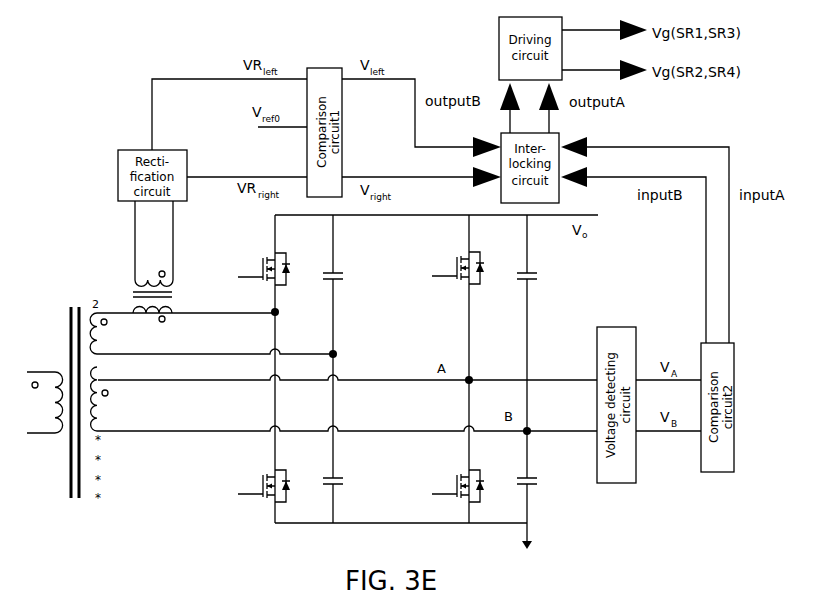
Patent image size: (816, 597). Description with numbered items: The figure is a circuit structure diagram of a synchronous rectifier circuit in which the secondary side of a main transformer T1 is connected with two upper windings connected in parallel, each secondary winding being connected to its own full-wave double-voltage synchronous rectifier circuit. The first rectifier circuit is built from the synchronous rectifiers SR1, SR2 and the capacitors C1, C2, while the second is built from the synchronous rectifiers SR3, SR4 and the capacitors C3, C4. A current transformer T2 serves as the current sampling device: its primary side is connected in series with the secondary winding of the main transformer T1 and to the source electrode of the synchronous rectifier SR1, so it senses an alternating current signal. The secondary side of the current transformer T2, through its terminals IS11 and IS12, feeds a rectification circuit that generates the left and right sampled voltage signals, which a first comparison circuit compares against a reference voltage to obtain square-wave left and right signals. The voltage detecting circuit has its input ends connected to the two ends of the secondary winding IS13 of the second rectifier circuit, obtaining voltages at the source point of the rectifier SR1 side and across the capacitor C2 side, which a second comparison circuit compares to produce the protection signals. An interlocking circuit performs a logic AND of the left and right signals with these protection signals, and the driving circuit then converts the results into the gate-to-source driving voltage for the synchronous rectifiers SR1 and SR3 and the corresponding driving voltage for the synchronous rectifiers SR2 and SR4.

The main transformer T1 is at (75, 420).
The current transformer T2 is at (160, 277).
The synchronous rectifier SR1 is at (256, 263).
The synchronous rectifier SR2 is at (255, 481).
The synchronous rectifier SR3 is at (450, 261).
The synchronous rectifier SR4 is at (448, 480).
The capacitor C1 is at (349, 278).
The capacitor C2 is at (349, 486).
The capacitor C3 is at (543, 275).
The capacitor C4 is at (542, 488).
The secondary terminal of current transformer IS11 is at (195, 282).
The secondary terminal of current transformer IS12 is at (102, 282).
The secondary winding IS13 is at (150, 469).